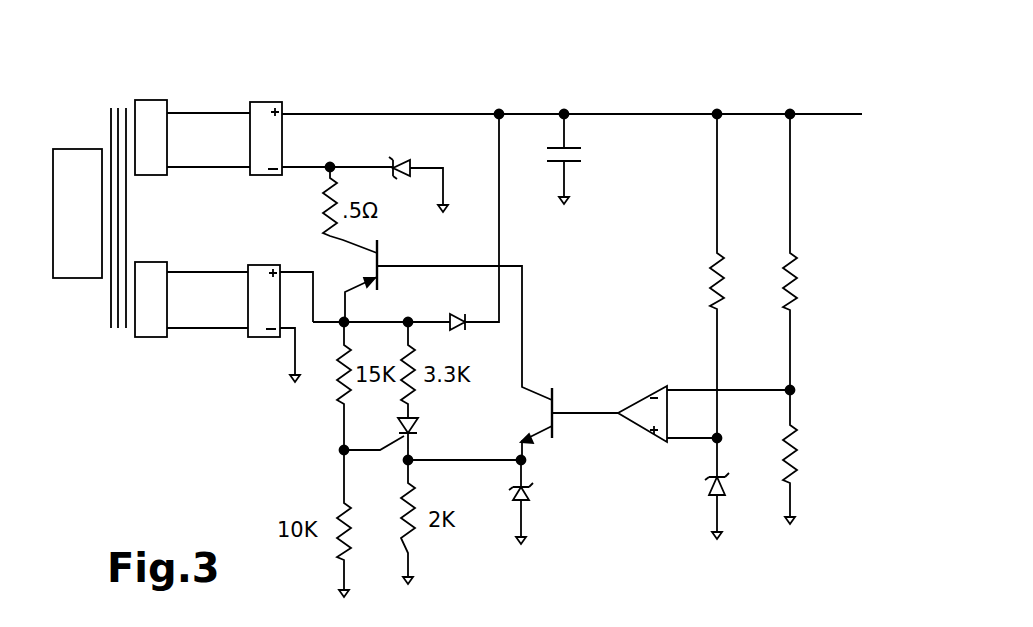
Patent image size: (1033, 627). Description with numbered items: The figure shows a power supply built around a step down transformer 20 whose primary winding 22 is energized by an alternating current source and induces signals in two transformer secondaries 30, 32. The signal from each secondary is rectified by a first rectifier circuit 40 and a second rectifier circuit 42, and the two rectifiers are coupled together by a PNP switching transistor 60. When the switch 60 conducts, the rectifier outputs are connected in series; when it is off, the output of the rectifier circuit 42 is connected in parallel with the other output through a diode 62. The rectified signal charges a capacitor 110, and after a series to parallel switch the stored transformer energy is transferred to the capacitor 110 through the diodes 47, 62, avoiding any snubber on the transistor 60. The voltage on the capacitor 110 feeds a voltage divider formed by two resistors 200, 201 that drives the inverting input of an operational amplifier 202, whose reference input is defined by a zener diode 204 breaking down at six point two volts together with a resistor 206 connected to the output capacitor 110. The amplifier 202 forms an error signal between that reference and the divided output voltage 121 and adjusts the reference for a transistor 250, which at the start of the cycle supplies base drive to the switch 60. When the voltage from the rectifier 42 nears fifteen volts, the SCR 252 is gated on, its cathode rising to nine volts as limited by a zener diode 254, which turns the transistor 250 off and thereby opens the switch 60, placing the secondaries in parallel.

The step down transformer 20 is at (90, 346).
The primary winding 22 is at (78, 163).
The transformer secondary 30 is at (163, 102).
The transformer secondary 32 is at (165, 337).
The first rectifier circuit 40 is at (263, 108).
The second rectifier circuit 42 is at (260, 325).
The diode 47 is at (398, 160).
The switching transistor 60 is at (380, 253).
The diode 62 is at (465, 313).
The capacitor 110 is at (572, 158).
The output voltage 121 is at (652, 114).
The resistor 200 is at (802, 288).
The resistor 201 is at (798, 455).
The operational amplifier 202 is at (647, 410).
The zener diode 204 is at (707, 486).
The resistor 206 is at (713, 272).
The transistor 250 is at (558, 392).
The SCR 252 is at (412, 433).
The zener diode 254 is at (513, 500).